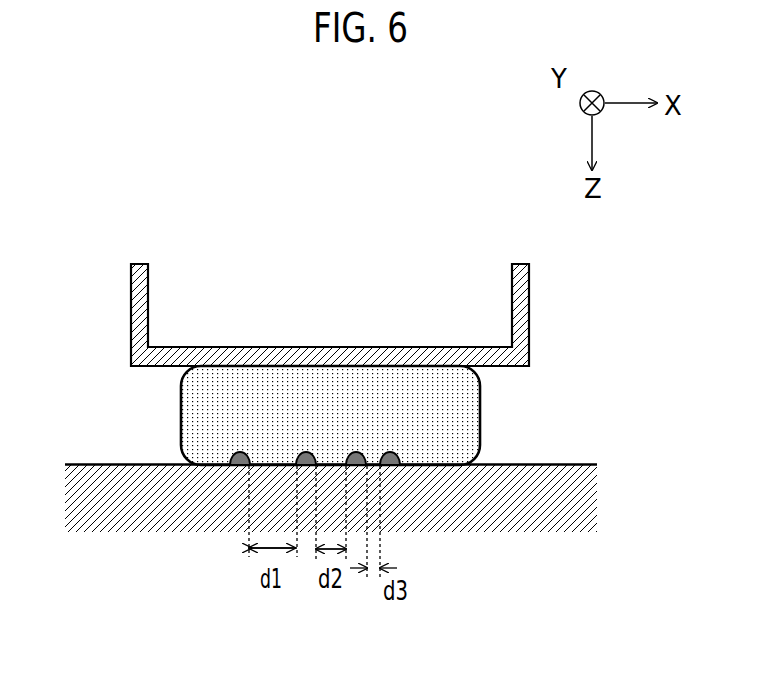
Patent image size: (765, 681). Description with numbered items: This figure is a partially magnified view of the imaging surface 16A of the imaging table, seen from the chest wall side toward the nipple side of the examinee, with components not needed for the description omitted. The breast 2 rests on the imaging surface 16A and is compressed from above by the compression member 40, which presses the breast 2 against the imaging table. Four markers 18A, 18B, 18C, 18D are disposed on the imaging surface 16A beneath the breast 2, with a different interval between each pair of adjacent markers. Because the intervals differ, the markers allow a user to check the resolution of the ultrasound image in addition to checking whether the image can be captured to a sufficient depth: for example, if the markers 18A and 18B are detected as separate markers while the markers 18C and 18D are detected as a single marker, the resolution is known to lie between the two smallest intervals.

The compression member 40 is at (529, 317).
The breast 2 is at (481, 435).
The imaging surface 16A is at (145, 464).
The marker 18A is at (240, 467).
The marker 18B is at (306, 467).
The marker 18C is at (356, 467).
The marker 18D is at (390, 467).